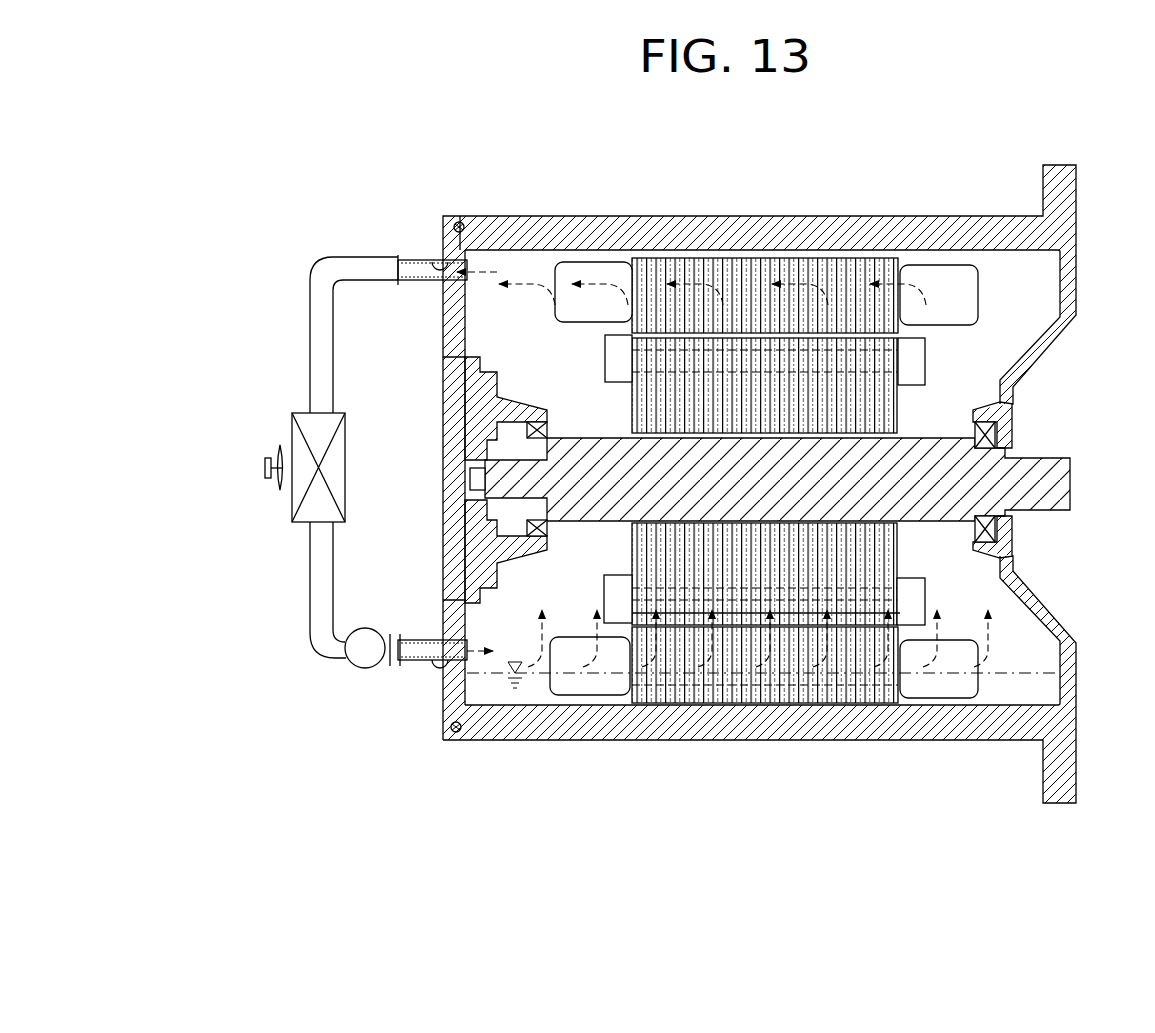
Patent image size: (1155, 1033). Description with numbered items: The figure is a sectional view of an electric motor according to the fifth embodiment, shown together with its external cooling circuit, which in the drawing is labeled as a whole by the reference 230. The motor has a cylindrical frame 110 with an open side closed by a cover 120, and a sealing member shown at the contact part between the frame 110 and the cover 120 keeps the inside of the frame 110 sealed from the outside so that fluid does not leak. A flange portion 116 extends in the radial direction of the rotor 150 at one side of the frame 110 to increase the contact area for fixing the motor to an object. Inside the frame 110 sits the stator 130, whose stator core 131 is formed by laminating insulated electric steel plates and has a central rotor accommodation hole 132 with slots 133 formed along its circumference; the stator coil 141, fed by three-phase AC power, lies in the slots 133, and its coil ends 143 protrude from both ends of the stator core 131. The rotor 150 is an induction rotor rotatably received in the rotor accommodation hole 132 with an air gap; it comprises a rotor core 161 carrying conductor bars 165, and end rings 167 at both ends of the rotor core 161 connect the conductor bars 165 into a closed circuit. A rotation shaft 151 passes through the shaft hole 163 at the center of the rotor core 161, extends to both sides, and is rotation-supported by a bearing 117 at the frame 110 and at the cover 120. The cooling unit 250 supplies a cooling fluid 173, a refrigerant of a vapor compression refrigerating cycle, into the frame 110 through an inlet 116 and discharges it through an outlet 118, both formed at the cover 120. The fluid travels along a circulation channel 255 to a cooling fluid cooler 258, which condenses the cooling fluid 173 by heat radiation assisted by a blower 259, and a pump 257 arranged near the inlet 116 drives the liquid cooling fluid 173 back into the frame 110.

The frame 110 is at (868, 214).
The inlet 116 is at (1043, 183).
The bearing 117 is at (530, 524).
The outlet 118 is at (430, 258).
The cover 120 is at (447, 337).
The stator 130 is at (764, 494).
The stator core 131 is at (812, 704).
The rotor accommodation hole 132 is at (875, 612).
The slots 133 is at (765, 754).
The stator coil 141 is at (930, 689).
The coil ends 143 is at (597, 272).
The rotor 150 is at (761, 597).
The rotation shaft 151 is at (1060, 490).
The rotor core 161 is at (685, 573).
The shaft hole 163 is at (990, 528).
The conductor bars 165 is at (730, 613).
The end rings 167 is at (617, 613).
The cooling fluid 173 is at (1003, 677).
The cooling device 230 is at (274, 404).
The cooling unit 250 is at (274, 462).
The circulation channel 255 is at (310, 372).
The pump 257 is at (352, 668).
The cooling fluid cooler 258 is at (292, 433).
The blower 259 is at (277, 504).